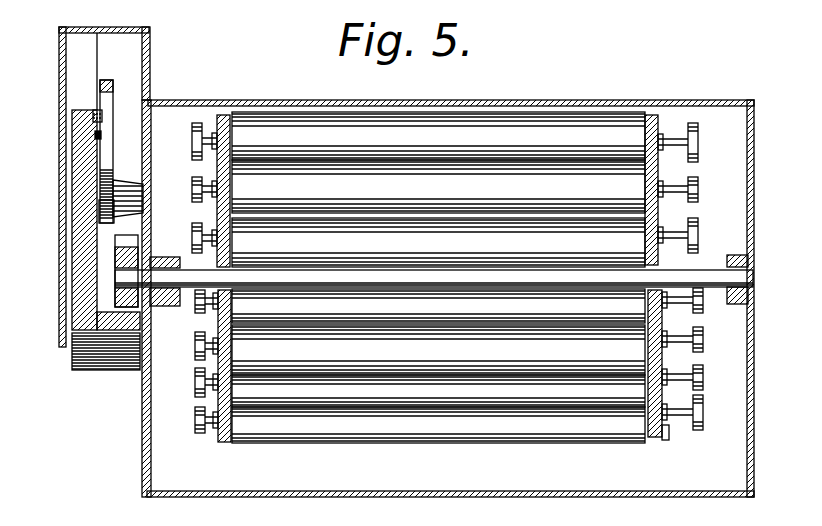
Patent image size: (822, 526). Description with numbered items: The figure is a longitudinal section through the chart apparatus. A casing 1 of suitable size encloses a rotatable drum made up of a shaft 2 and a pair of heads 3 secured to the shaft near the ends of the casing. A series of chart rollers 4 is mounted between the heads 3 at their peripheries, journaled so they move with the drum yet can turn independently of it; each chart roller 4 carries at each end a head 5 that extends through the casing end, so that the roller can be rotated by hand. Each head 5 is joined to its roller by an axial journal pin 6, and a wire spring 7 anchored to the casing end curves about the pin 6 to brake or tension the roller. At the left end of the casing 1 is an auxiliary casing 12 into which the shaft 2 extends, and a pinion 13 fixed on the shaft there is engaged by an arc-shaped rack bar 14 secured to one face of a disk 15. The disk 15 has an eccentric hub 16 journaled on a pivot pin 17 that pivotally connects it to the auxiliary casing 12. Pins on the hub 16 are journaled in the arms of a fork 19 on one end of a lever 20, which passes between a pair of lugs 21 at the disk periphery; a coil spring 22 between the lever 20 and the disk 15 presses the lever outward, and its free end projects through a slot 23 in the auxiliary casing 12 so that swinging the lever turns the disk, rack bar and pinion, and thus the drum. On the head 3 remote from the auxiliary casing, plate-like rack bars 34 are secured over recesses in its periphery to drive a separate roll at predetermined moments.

The casing 1 is at (753, 152).
The shaft 2 is at (743, 270).
The heads 3 is at (657, 440).
The chart rollers 4 is at (438, 277).
The head 5 is at (698, 182).
The axial journal pin 6 is at (677, 378).
The spring 7 is at (663, 228).
The auxiliary casing 12 is at (62, 42).
The pinion 13 is at (127, 242).
The arc-shaped rack bar 14 is at (107, 314).
The disk 15 is at (84, 260).
The eccentric hub 16 is at (99, 210).
The pivot pin 17 is at (93, 202).
The fork 19 is at (99, 228).
The lever 20 is at (113, 82).
The lugs 21 is at (94, 112).
The coil spring 22 is at (95, 134).
The slot 23 is at (104, 30).
The rack bars 34 is at (668, 441).